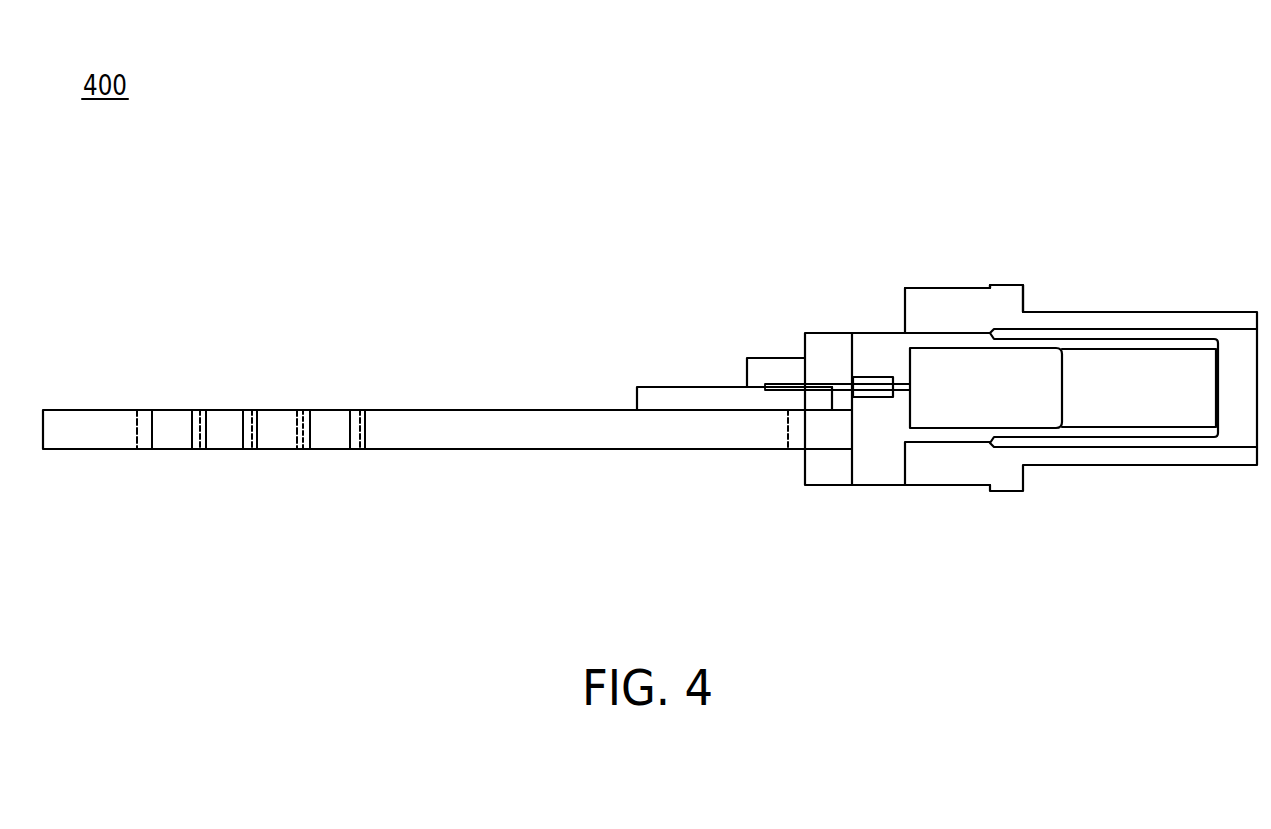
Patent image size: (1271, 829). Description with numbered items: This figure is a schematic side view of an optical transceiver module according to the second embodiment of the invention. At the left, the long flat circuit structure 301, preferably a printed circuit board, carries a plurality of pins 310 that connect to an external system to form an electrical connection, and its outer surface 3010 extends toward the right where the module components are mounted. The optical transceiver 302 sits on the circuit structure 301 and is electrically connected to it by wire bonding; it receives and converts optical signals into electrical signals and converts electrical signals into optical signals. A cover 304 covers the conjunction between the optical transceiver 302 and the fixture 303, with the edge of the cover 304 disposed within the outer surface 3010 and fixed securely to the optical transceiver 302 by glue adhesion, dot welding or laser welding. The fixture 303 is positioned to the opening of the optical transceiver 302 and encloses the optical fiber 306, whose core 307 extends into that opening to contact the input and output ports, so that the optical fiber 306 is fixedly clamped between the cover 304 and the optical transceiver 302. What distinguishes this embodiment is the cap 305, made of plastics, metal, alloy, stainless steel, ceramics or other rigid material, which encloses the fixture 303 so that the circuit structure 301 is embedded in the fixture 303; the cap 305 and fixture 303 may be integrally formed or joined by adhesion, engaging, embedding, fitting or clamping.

The circuit structure 301 is at (93, 421).
The pins 310 is at (143, 418).
The outer surface 3010 is at (488, 410).
The optical transceiver 302 is at (690, 396).
The cover 304 is at (777, 365).
The cap 305 is at (1039, 307).
The core 307 is at (773, 390).
The optical fiber 306 is at (874, 398).
The fixture 303 is at (1133, 417).